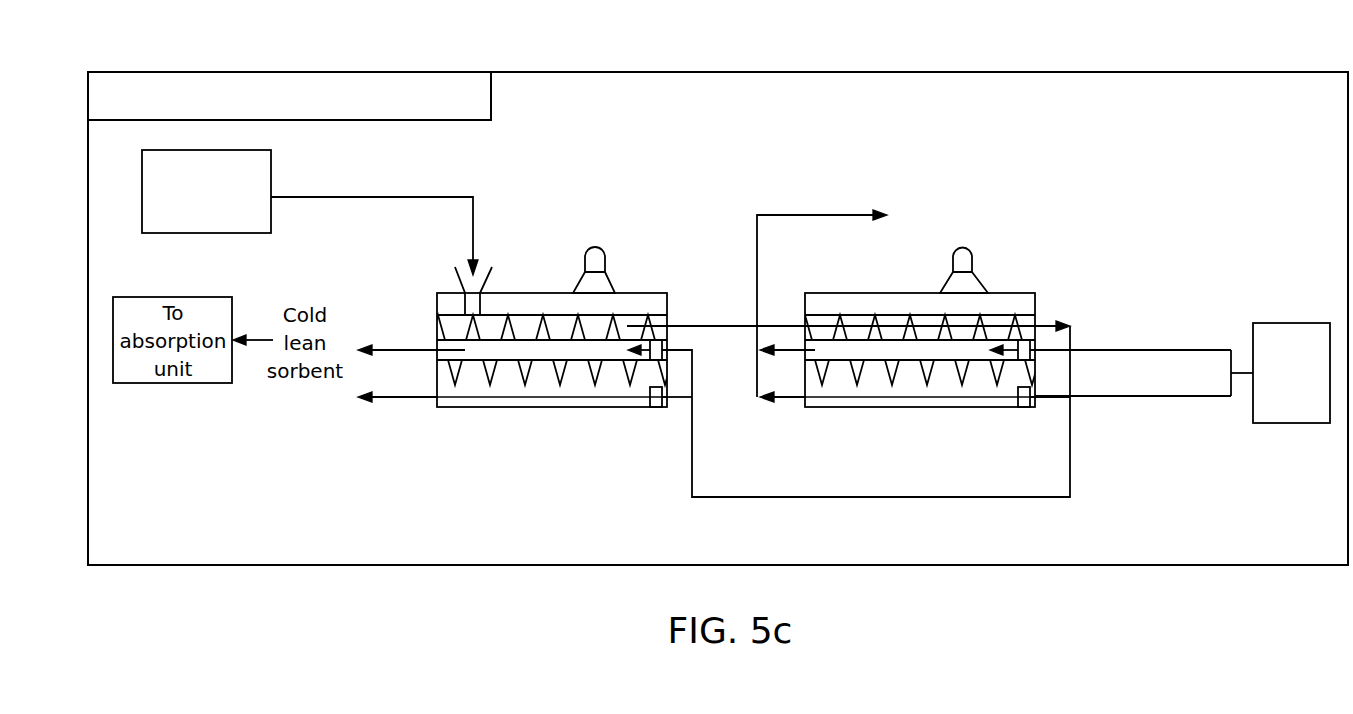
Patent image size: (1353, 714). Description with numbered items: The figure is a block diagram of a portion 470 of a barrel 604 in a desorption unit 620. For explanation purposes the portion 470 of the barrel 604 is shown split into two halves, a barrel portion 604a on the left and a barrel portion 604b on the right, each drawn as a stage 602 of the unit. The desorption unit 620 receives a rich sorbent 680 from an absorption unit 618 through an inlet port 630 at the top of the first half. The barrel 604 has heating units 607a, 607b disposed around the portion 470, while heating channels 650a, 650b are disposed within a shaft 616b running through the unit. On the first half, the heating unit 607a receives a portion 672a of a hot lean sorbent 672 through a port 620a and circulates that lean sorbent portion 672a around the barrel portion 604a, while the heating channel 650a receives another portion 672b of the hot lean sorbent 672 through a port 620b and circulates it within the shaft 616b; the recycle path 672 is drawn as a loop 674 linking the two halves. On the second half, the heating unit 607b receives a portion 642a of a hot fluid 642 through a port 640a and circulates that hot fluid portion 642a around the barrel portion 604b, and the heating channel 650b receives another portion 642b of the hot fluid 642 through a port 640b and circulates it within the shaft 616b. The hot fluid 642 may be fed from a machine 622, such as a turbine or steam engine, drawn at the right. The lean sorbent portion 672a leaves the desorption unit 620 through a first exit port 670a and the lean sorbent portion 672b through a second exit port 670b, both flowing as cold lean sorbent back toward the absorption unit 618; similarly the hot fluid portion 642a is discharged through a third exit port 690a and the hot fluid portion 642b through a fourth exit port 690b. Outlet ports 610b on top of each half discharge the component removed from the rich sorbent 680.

The portion of barrel 470 is at (218, 30).
The desorption unit 620 is at (658, 55).
The absorption unit 618 is at (206, 233).
The rich sorbent 680 is at (341, 196).
The inlet port 630 is at (484, 287).
The desorption stage unit 602 is at (424, 273).
The barrel 604 is at (477, 410).
The barrel portion 604a is at (433, 415).
The barrel portion 604b is at (808, 416).
The heating channel 650a is at (541, 355).
The heating channel 650b is at (941, 355).
The shaft 616b is at (560, 338).
The heating unit 607a is at (578, 372).
The heating unit 607b is at (985, 372).
The outlet ports 610b is at (597, 246).
The port 620b is at (652, 338).
The port 620a is at (648, 406).
The port 640b is at (1020, 338).
The port 640a is at (1022, 410).
The second exit port 670b is at (437, 345).
The first exit port 670a is at (437, 405).
The lean sorbent portion 672b is at (693, 348).
The lean sorbent portion 672a is at (680, 399).
The hot lean sorbent 672 is at (1072, 453).
The transfer loop 674 is at (806, 214).
The fourth exit port 690b is at (805, 345).
The third exit port 690a is at (786, 399).
The hot fluid 642 is at (1245, 372).
The hot fluid portion 642b is at (1137, 348).
The hot fluid portion 642a is at (1183, 398).
The machine 622 is at (1291, 373).